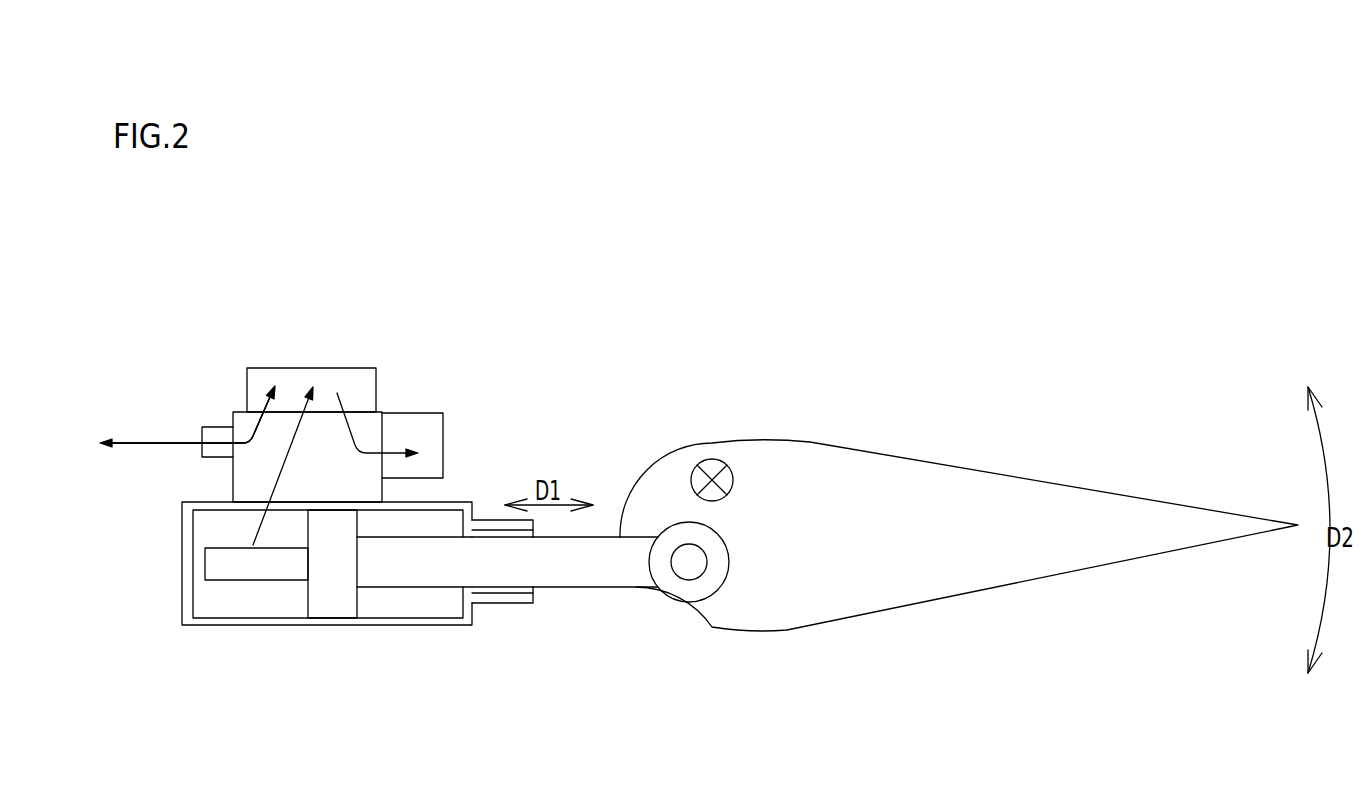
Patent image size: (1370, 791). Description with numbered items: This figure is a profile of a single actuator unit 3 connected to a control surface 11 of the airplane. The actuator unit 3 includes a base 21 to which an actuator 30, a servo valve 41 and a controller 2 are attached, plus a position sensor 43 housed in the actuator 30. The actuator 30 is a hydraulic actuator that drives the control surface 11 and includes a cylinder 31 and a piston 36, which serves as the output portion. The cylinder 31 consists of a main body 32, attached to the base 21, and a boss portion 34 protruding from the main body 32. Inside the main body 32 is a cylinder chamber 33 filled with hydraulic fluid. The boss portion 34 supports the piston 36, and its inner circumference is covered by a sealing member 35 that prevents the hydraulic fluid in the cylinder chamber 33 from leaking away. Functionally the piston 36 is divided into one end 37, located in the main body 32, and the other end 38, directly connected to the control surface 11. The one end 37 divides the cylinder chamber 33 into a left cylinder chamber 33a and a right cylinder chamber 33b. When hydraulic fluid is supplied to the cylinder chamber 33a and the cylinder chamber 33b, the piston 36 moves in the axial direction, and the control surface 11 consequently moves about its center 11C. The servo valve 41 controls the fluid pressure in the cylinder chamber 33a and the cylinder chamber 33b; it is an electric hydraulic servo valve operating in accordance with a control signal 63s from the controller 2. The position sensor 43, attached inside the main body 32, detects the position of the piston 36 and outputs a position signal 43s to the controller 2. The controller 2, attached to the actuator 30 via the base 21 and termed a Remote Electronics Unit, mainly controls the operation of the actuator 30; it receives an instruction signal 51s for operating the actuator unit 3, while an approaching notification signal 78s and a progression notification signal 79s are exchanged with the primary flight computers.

The actuator unit 3 is at (220, 345).
The controller 2 is at (330, 380).
The base 21 is at (362, 423).
The servo valve 41 is at (418, 435).
The instruction signal 51s is at (148, 442).
The approaching notification signal 78s is at (189, 416).
The progression notification signal 79s is at (189, 416).
The position signal 43s is at (292, 450).
The control signal 63s is at (360, 452).
The actuator 30 is at (195, 628).
The cylinder 31 is at (418, 710).
The main body 32 is at (423, 620).
The cylinder chamber 33 is at (199, 539).
The cylinder chamber 33a is at (259, 590).
The cylinder chamber 33b is at (400, 595).
The boss portion 34 is at (490, 598).
The sealing member 35 is at (507, 588).
The piston 36 is at (593, 587).
The one end 37 is at (333, 607).
The other end 38 is at (690, 562).
The position sensor 43 is at (236, 567).
The control surface 11 is at (853, 573).
The center 11C is at (713, 465).